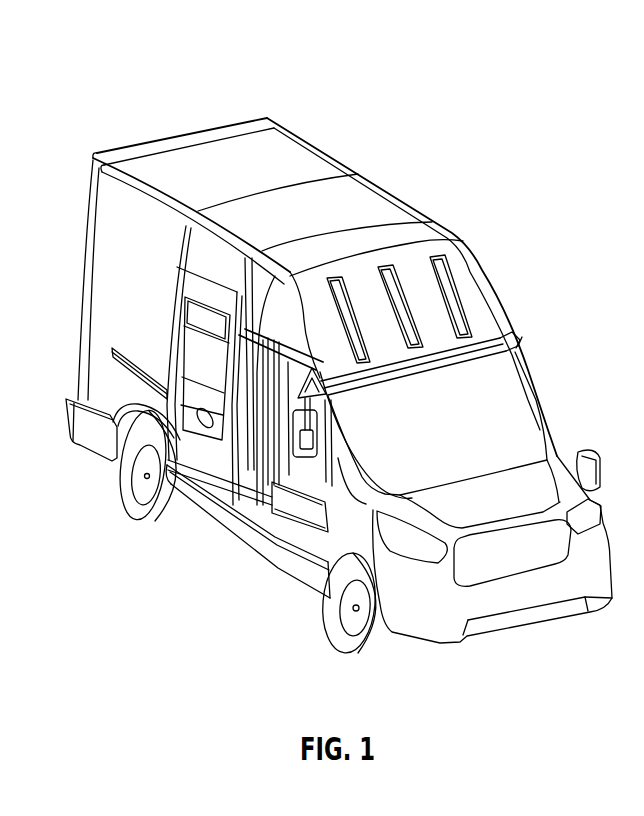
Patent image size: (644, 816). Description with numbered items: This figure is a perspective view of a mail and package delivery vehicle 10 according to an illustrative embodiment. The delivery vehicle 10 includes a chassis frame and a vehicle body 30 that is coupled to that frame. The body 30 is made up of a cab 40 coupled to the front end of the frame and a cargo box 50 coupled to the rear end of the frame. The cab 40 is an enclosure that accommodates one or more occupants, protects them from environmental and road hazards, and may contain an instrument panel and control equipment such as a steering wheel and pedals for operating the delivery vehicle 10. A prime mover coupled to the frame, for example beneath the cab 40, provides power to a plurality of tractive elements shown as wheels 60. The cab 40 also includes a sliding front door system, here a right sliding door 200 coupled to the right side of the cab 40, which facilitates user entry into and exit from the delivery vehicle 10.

The delivery vehicle 10 is at (108, 70).
The body 30 is at (447, 204).
The cab 40 is at (560, 458).
The cargo box 50 is at (313, 165).
The wheels 60 is at (152, 513).
The right sliding door 200 is at (289, 581).